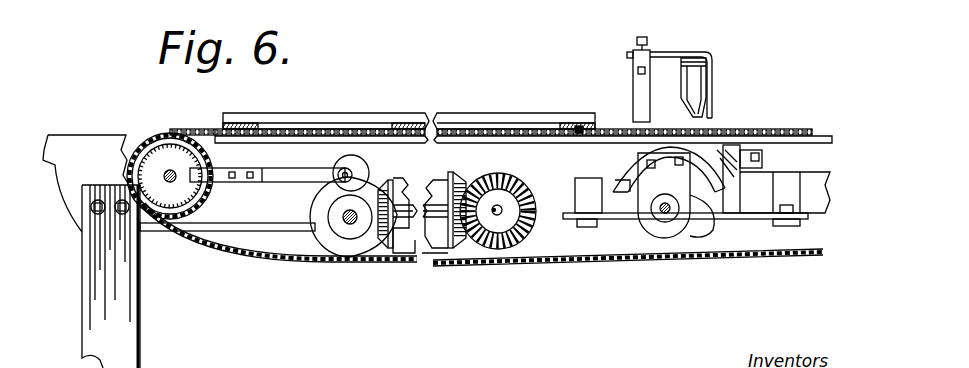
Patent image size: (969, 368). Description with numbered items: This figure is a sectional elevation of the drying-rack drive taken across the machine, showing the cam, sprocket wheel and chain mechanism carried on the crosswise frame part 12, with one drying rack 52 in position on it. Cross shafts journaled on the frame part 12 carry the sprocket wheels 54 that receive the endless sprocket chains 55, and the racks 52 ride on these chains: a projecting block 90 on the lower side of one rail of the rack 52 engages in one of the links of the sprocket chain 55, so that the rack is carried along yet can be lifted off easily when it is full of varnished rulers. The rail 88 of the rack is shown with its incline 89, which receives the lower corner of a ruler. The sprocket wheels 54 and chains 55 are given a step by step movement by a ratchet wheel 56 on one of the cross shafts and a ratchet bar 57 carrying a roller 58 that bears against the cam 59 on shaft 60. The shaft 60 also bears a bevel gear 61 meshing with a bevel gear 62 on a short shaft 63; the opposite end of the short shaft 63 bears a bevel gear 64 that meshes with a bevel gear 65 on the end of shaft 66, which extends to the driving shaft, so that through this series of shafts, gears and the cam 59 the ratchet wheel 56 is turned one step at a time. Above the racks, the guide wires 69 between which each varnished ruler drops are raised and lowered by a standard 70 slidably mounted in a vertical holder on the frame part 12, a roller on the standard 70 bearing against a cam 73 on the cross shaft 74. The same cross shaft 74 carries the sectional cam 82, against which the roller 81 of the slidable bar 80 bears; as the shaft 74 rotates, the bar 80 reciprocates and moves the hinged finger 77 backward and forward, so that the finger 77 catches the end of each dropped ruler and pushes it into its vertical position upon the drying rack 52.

The frame part 12 is at (138, 308).
The drying rack 52 is at (433, 124).
The sprocket wheel 54 is at (206, 210).
The sprocket chain 55 is at (238, 262).
The ratchet wheel 56 is at (168, 150).
The ratchet bar 57 is at (283, 170).
The roller 58 is at (365, 166).
The cam 59 is at (362, 237).
The shaft 60 is at (346, 224).
The bevel gear 61 is at (384, 250).
The bevel gear 62 is at (404, 252).
The short shaft 63 is at (414, 220).
The bevel gear 64 is at (460, 250).
The bevel gear 65 is at (514, 248).
The shaft 66 is at (497, 216).
The guide wire 69 is at (712, 103).
The standard 70 is at (633, 70).
The cam 73 is at (706, 229).
The cross shaft 74 is at (660, 215).
The finger 77 is at (702, 72).
The bar 80 is at (760, 157).
The roller 81 is at (763, 167).
The sectional cam 82 is at (622, 170).
The rail 88 is at (350, 113).
The incline 89 is at (485, 115).
The projecting block 90 is at (255, 126).